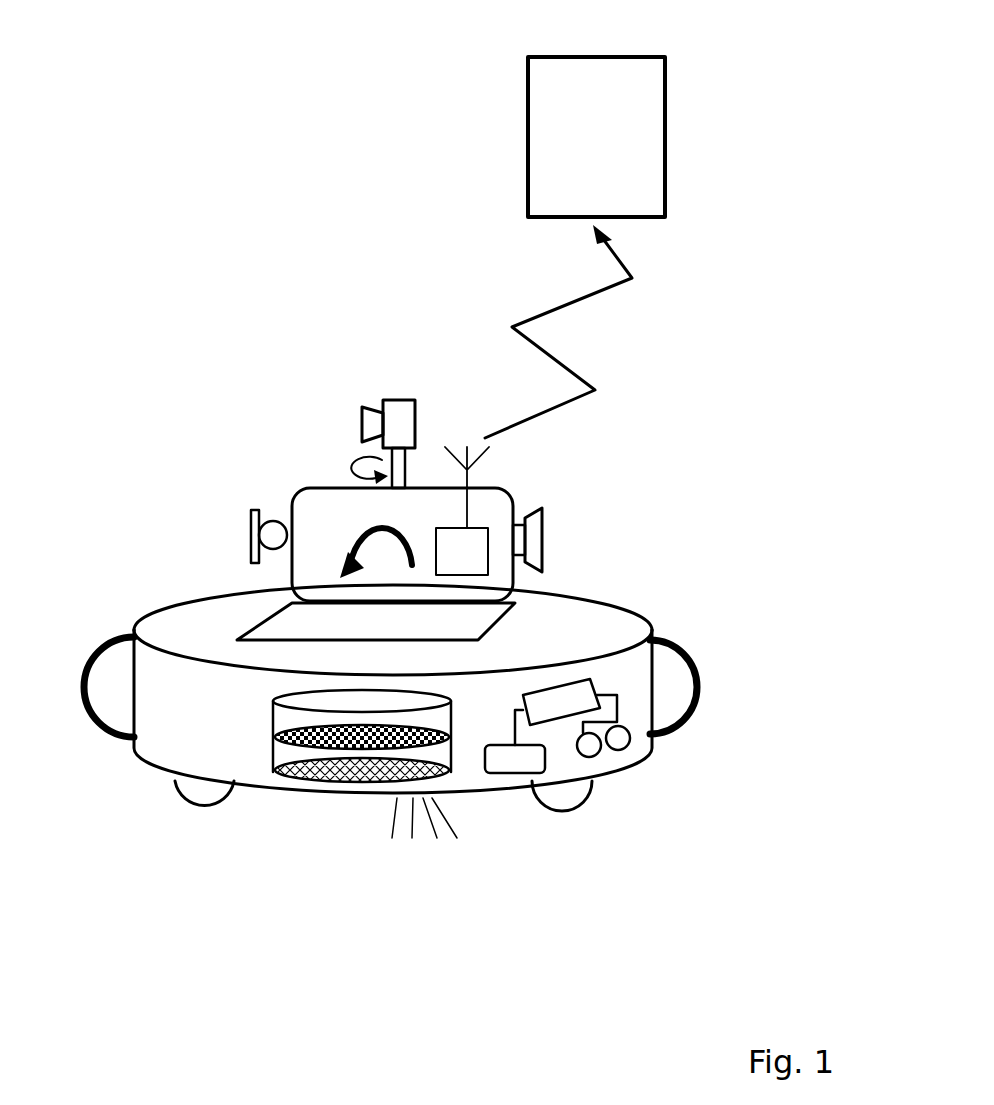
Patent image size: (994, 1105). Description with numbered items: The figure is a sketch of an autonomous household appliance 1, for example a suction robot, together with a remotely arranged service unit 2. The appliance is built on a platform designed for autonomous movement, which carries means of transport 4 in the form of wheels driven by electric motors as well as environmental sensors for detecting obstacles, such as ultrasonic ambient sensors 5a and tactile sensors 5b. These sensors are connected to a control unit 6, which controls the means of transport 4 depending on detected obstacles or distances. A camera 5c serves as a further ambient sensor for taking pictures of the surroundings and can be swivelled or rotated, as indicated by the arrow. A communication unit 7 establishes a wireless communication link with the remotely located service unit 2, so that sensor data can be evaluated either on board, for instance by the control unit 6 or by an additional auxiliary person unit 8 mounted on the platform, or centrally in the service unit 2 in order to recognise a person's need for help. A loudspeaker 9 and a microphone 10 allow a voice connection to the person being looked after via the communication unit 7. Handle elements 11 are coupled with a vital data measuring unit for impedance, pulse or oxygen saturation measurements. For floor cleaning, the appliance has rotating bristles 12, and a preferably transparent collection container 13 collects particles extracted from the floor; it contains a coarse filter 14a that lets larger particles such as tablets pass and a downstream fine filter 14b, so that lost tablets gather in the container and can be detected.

The autonomous household appliance 1 is at (110, 524).
The service unit 2 is at (528, 128).
The means of transport 4 is at (207, 798).
The ambient sensors 5a is at (607, 752).
The tactile sensors 5b is at (498, 777).
The camera 5c is at (403, 400).
The control unit 6 is at (580, 693).
The communication unit 7 is at (489, 528).
The auxiliary person unit 8 is at (312, 488).
The loudspeaker 9 is at (543, 540).
The microphone 10 is at (250, 525).
The handle elements 11 is at (110, 645).
The rotating bristles 12 is at (413, 833).
The collection container 13 is at (278, 752).
The coarse filter 14a is at (358, 780).
The fine filter 14b is at (452, 747).